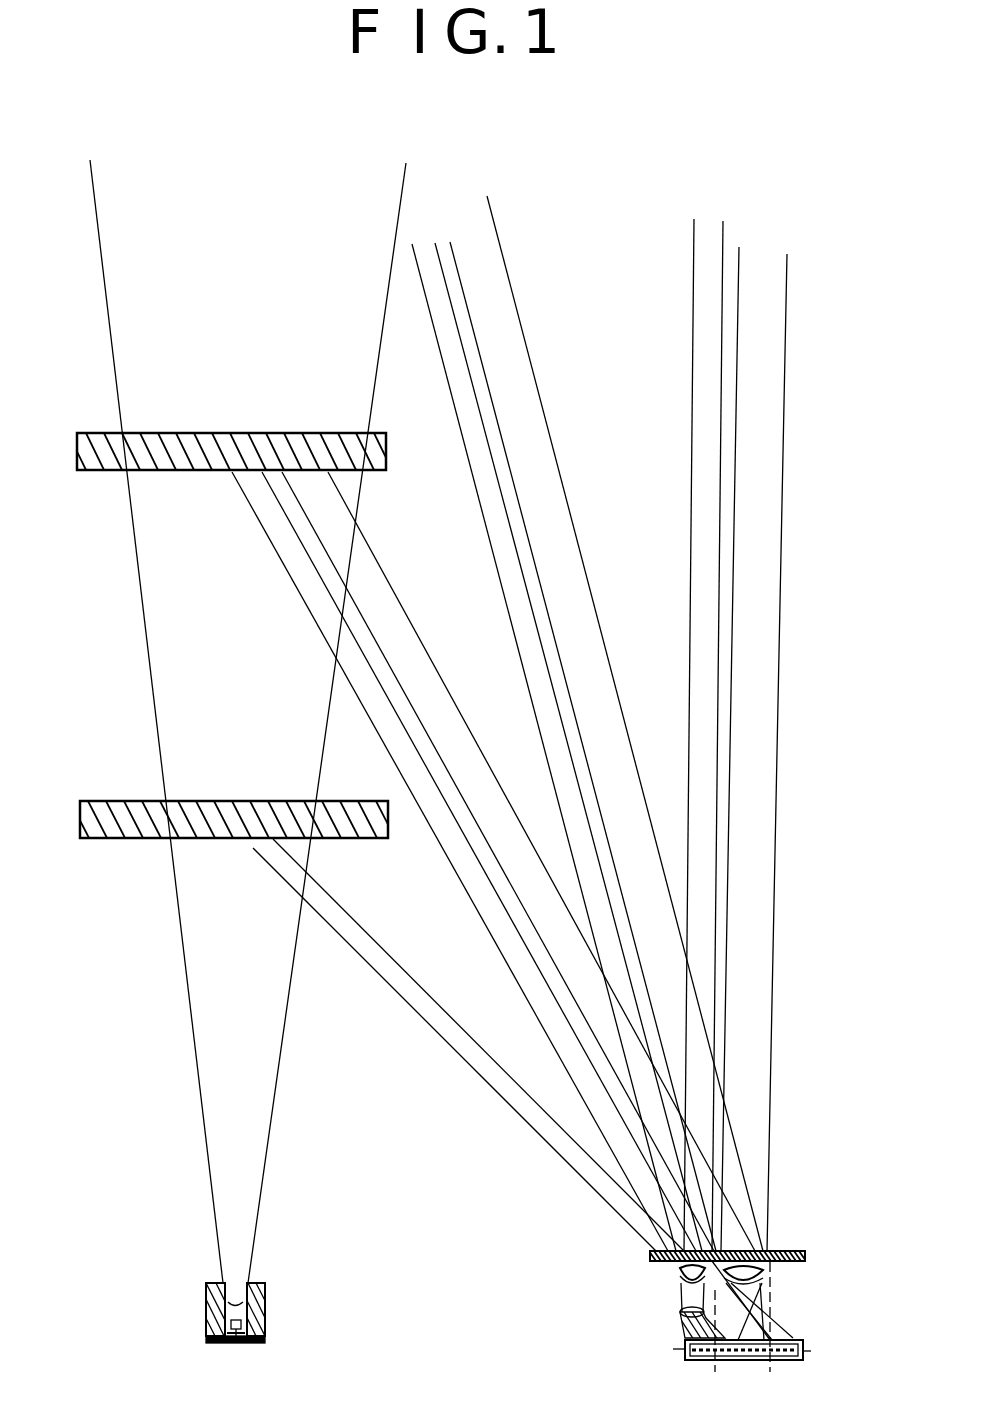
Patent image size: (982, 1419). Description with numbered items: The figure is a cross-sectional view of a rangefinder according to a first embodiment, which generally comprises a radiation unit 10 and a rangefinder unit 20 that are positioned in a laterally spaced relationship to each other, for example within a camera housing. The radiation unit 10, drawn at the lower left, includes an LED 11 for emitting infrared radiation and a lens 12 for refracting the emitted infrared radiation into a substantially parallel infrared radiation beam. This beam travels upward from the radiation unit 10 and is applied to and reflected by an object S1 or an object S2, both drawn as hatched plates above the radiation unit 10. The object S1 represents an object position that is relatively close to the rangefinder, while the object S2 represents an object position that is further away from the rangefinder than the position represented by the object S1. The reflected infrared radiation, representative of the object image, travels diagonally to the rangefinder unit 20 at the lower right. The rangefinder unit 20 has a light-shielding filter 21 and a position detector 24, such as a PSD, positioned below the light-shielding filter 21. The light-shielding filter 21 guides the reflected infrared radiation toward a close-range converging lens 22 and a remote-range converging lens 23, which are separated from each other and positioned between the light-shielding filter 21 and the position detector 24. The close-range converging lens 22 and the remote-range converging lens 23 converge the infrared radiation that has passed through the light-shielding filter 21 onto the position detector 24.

The radiation unit 10 is at (243, 1303).
The LED 11 is at (263, 1331).
The lens 12 is at (212, 1295).
The rangefinder unit 20 is at (642, 1279).
The light-shielding filter 21 is at (800, 1251).
The close-range converging lens 22 is at (680, 1283).
The remote-range converging lens 23 is at (770, 1266).
The position detector 24 is at (688, 1353).
The object S1 is at (108, 839).
The object S2 is at (107, 471).